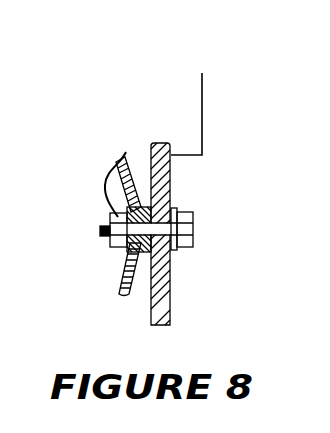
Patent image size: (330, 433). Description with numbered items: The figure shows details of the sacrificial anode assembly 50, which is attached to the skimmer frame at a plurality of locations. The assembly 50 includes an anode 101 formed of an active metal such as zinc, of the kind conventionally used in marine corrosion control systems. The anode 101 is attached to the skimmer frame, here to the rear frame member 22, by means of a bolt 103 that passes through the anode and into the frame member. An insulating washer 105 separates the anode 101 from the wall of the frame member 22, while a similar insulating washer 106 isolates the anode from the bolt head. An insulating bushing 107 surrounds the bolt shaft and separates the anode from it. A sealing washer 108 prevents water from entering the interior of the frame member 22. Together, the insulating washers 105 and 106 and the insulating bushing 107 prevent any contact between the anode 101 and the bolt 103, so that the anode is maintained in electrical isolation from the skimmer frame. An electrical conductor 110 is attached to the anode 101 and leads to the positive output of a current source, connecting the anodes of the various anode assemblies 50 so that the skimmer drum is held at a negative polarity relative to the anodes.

The anode 101 is at (158, 287).
The electrical conductor 110 is at (203, 110).
The sacrificial anode assembly 50 is at (229, 236).
The bolt 103 is at (117, 213).
The insulating bushing 107 is at (163, 205).
The insulating washer 106 is at (171, 247).
The insulating washer 105 is at (138, 165).
The rear frame member 22 is at (122, 282).
The sealing washer 108 is at (126, 152).